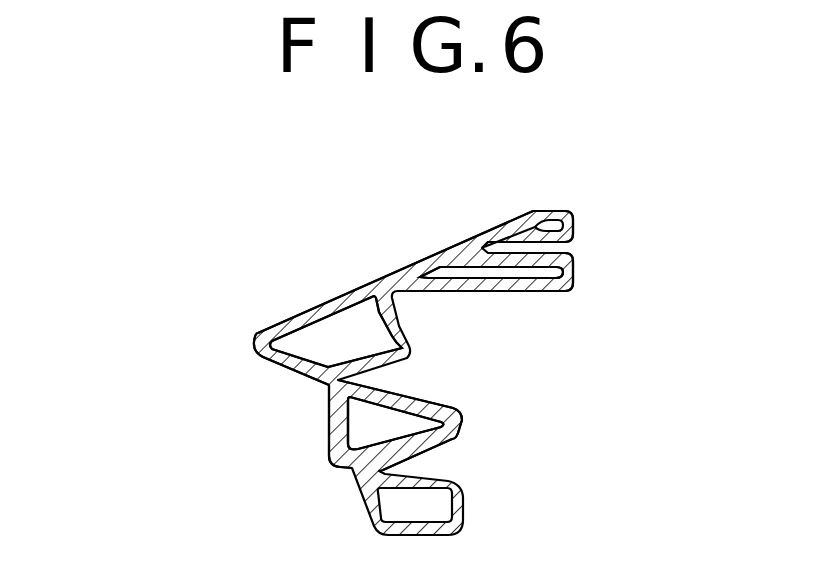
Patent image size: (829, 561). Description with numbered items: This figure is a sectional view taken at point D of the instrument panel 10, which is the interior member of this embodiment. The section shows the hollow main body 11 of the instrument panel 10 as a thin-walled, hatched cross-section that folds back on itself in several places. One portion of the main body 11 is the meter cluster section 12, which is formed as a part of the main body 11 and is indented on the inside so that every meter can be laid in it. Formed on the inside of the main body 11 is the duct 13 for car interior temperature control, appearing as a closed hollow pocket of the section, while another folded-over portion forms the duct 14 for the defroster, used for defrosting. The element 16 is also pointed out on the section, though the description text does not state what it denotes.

The instrument panel 10 is at (180, 300).
The hollow main body 11 is at (312, 306).
The meter cluster section 12 is at (329, 424).
The duct for car interior temperature control 13 is at (417, 427).
The duct for defroster 14 is at (533, 272).
The flange portion 16 is at (433, 259).